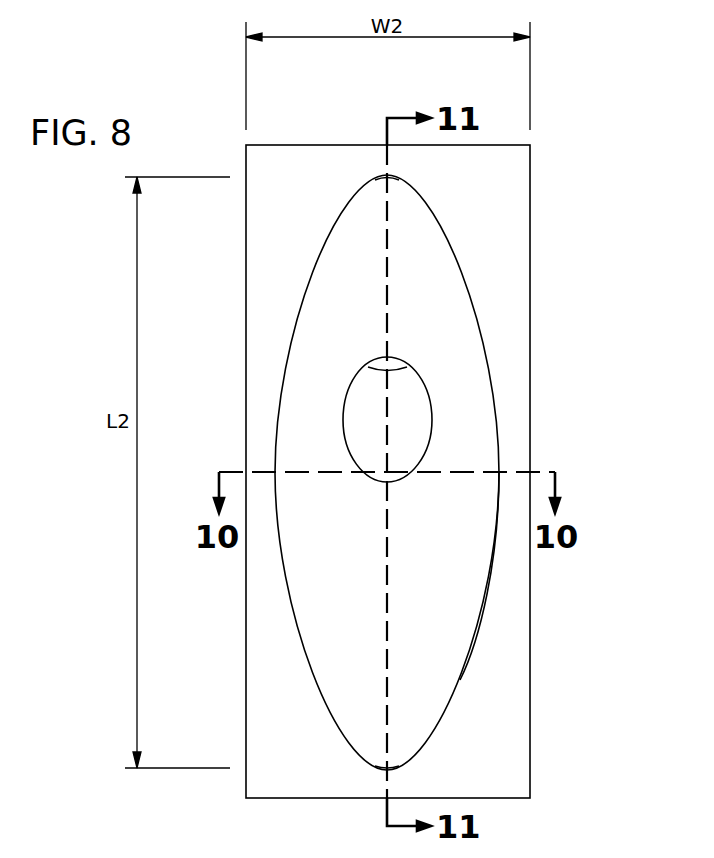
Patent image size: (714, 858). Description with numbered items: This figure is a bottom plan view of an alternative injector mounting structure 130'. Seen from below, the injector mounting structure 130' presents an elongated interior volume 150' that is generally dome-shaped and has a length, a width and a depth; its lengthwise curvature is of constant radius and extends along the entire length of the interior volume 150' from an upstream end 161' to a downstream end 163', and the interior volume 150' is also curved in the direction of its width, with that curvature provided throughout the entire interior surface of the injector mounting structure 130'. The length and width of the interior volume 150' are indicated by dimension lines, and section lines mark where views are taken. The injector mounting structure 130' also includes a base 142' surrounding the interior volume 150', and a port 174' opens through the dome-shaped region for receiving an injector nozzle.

The injector mounting structure 130' is at (439, 471).
The interior volume 150' is at (440, 472).
The base 142' is at (548, 577).
The upstream end 161' is at (483, 165).
The downstream end 163' is at (485, 751).
The port 174' is at (480, 419).